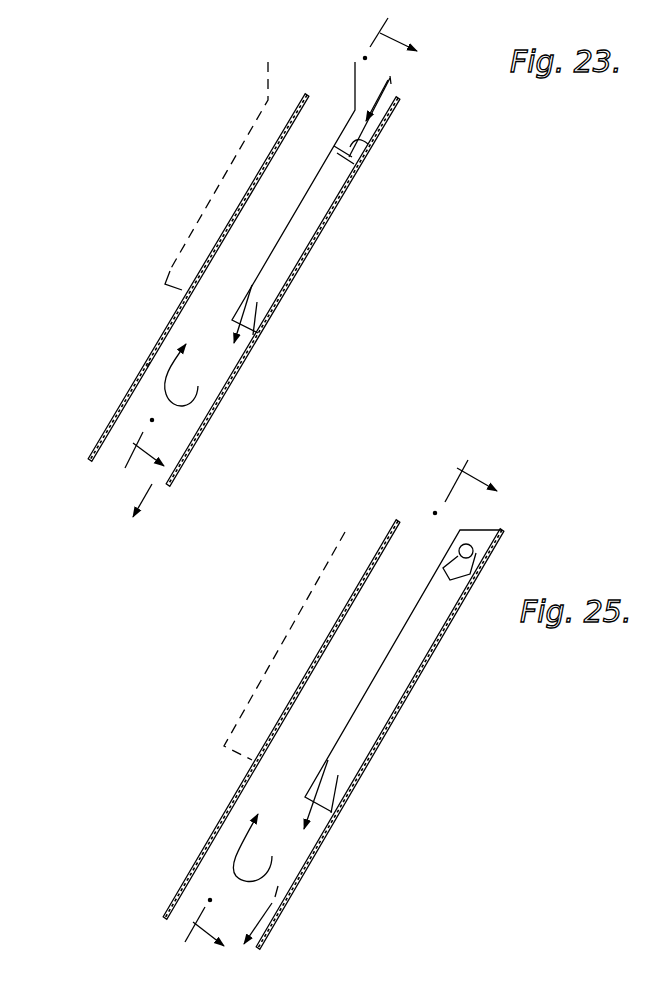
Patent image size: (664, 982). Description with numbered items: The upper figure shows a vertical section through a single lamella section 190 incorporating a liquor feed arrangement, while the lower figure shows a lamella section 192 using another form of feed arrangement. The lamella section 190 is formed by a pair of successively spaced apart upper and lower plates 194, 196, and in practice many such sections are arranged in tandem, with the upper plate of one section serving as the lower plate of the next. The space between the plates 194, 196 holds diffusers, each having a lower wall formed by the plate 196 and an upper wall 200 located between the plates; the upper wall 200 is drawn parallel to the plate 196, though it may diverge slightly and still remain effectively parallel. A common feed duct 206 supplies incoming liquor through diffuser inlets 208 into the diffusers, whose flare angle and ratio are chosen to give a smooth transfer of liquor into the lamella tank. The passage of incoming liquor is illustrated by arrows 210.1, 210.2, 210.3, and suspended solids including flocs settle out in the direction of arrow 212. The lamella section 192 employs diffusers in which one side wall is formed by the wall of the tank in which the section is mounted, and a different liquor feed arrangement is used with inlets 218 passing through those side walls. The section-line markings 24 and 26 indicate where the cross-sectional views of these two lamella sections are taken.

In FIG. 23, the lamella section 190 is at (216, 160).
In FIG. 25, the lamella section 192 is at (203, 811).
In FIG. 23, the upper plate 194 is at (208, 258).
In FIG. 25, the upper plate 194 is at (197, 868).
In FIG. 23, the lower plate 196 is at (222, 398).
In FIG. 25, the lower plate 196 is at (313, 846).
In FIG. 23, the upper wall 200 is at (288, 215).
In FIG. 25, the upper wall 200 is at (375, 665).
In FIG. 23, the common feed duct 206 is at (368, 144).
In FIG. 23, the diffuser inlets 208 is at (364, 154).
In FIG. 23, the arrow 210.1 is at (392, 82).
In FIG. 23, the arrow 210.2 is at (258, 304).
In FIG. 23, the arrow 210.3 is at (147, 367).
In FIG. 23, the arrow 212 is at (154, 489).
In FIG. 25, the arrow 212 is at (278, 912).
In FIG. 25, the inlets 218 is at (473, 572).
In FIG. 23, the section line 24- 24 is at (289, 243).
In FIG. 25, the section line 26- 26 is at (356, 713).